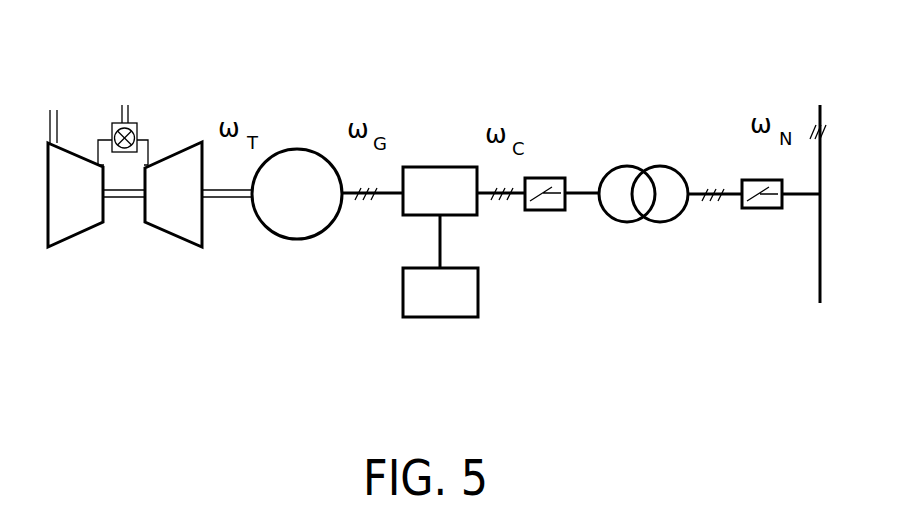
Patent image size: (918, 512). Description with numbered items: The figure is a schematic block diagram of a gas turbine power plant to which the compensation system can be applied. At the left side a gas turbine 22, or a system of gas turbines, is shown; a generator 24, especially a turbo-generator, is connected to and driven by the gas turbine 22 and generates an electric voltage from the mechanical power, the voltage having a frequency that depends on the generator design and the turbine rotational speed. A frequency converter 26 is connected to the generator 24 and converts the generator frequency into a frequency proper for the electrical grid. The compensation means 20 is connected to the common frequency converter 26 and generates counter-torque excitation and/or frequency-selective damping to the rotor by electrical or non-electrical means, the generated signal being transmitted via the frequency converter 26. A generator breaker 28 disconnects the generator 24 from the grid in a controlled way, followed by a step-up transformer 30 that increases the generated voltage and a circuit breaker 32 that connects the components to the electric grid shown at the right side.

The compensation means 20 is at (425, 295).
The gas turbine 22 is at (165, 168).
The generator 24 is at (288, 163).
The frequency converter 26 is at (427, 175).
The generator breaker 28 is at (527, 210).
The step-up transformer 30 is at (623, 177).
The circuit breaker 32 is at (747, 207).